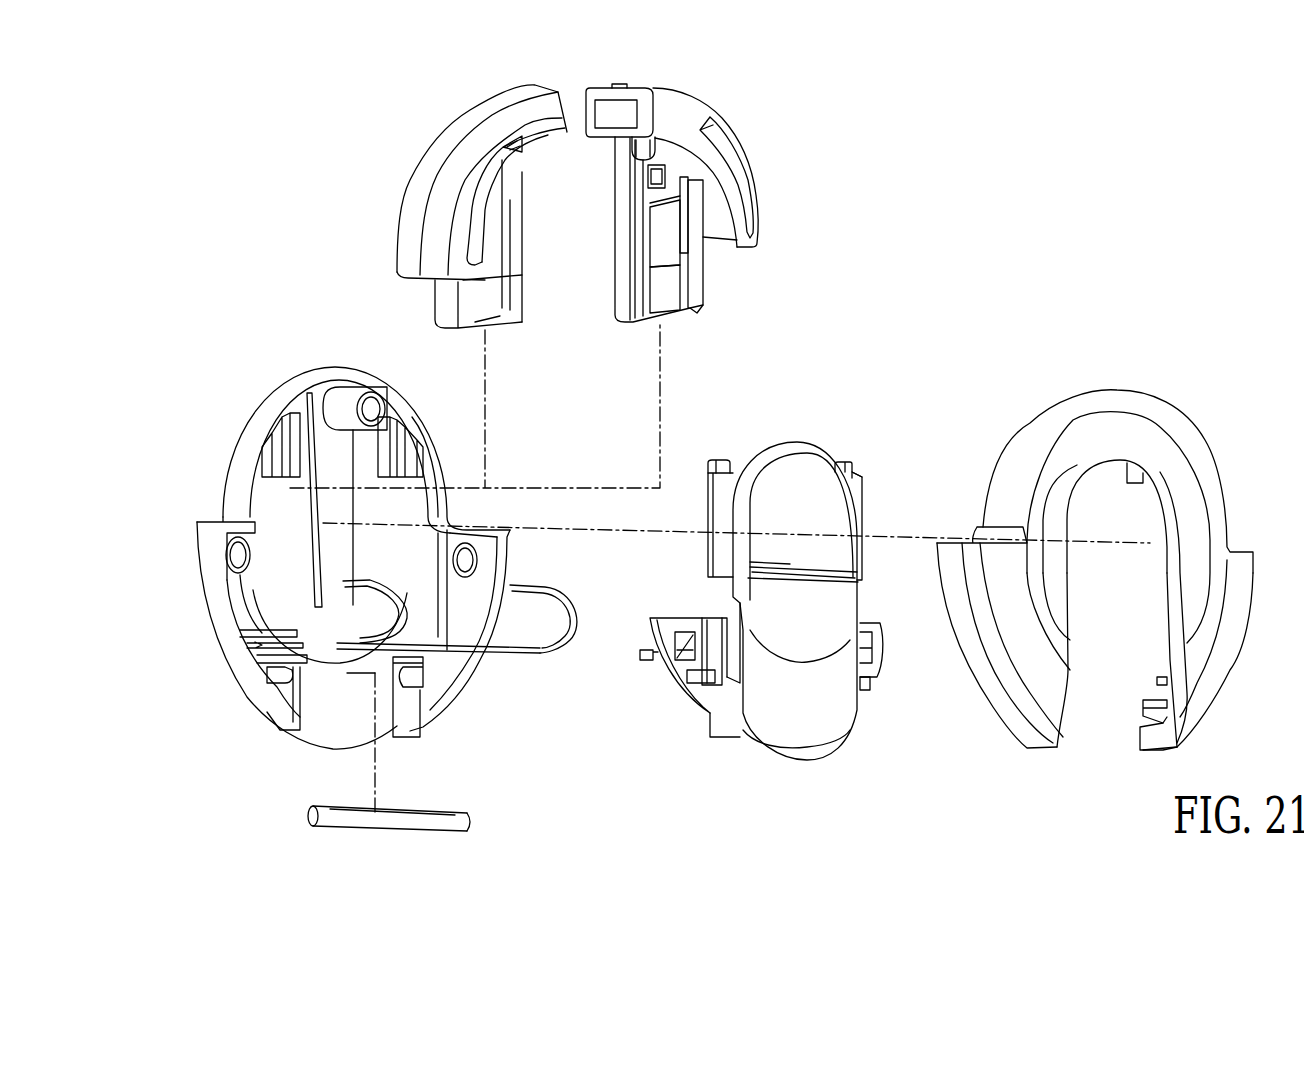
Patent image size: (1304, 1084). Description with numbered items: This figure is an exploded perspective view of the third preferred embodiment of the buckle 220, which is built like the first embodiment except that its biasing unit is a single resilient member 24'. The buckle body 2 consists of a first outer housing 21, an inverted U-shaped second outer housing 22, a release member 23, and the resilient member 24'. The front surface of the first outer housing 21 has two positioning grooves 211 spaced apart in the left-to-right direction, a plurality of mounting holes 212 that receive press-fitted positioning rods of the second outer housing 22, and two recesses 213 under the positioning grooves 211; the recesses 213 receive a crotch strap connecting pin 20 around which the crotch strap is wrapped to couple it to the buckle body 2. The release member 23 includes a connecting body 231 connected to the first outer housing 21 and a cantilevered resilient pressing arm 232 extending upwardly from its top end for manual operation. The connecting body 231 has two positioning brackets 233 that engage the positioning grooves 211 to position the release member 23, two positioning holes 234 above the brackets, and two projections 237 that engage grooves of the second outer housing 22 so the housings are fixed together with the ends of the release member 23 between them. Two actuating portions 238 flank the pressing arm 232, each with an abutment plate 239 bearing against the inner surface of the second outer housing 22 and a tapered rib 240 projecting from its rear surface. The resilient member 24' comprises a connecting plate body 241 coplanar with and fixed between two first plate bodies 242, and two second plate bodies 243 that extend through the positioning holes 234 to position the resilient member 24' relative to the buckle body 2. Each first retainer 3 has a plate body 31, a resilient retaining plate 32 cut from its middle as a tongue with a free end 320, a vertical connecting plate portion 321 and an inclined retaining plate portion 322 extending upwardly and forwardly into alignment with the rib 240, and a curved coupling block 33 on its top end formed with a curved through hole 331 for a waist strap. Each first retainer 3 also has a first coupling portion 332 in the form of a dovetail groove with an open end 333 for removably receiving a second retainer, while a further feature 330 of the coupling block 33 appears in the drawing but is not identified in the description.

The buckle body 2 is at (335, 514).
The first retainer 3 is at (418, 137).
The crotch strap connecting pin 20 is at (311, 814).
The first outer housing 21 is at (335, 554).
The second outer housing 22 is at (1156, 379).
The release member 23 is at (775, 574).
The resilient member 24' is at (364, 671).
The plate body 31 is at (697, 282).
The resilient retaining plate 32 is at (673, 243).
The curved coupling block 33 is at (677, 120).
The positioning groove 211 is at (268, 647).
The mounting hole 212 is at (372, 402).
The recess 213 is at (265, 672).
The buckle 220 is at (335, 456).
The connecting body 231 is at (734, 713).
The resilient pressing arm 232 is at (797, 480).
The positioning bracket 233 is at (648, 660).
The positioning hole 234 is at (680, 633).
The projection 237 is at (702, 680).
The actuating portion 238 is at (690, 462).
The abutment plate 239 is at (708, 513).
The rib 240 is at (712, 458).
The connecting plate body 241 is at (460, 657).
The first plate body 242 is at (538, 652).
The second plate body 243 is at (313, 585).
The free end 320 is at (677, 202).
The vertical connecting plate portion 321 is at (657, 288).
The inclined retaining plate portion 322 is at (663, 232).
The arm inner surface 330 is at (707, 183).
The curved through hole 331 is at (710, 139).
The first coupling portion 332 is at (605, 103).
The open end 333 is at (590, 110).